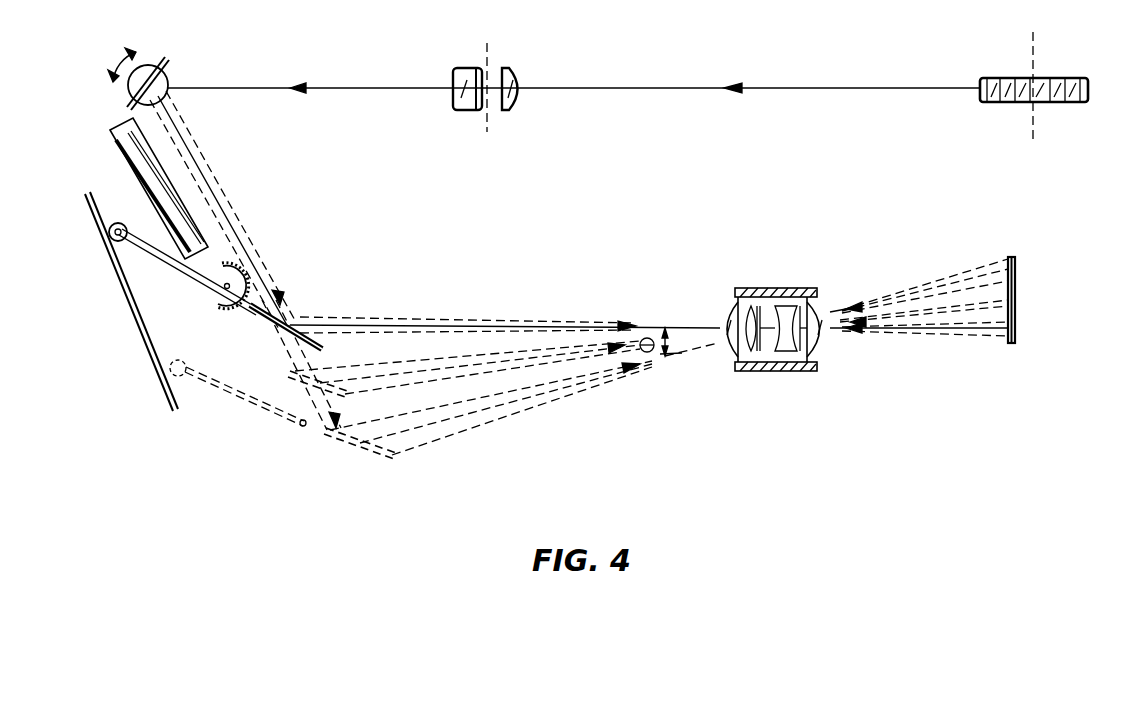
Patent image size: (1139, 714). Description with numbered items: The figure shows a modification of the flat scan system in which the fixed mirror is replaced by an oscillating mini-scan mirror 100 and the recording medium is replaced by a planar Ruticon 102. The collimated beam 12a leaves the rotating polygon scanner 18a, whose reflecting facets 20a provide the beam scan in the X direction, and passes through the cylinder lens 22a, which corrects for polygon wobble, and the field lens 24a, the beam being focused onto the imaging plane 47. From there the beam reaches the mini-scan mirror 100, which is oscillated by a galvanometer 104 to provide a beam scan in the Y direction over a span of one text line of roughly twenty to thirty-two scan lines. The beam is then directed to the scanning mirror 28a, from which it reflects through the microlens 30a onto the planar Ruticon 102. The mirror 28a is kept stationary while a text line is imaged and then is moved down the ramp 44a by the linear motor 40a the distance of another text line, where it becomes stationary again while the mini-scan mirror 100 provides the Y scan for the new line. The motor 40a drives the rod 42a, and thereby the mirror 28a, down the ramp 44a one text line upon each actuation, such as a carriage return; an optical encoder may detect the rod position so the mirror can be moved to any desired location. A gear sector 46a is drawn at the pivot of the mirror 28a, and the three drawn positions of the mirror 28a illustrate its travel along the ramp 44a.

The collimated beam 12a is at (820, 89).
The rotating polygon scanner 18a is at (1023, 78).
The reflecting facets 20a is at (1060, 102).
The imaging plane 47 is at (488, 58).
The field lens 24a is at (453, 100).
The cylinder lens 22a is at (523, 102).
The oscillating mini-scan mirror 100 is at (165, 59).
The galvanometer 104 is at (171, 80).
The linear motor 40a is at (128, 163).
The push rod 42a is at (207, 278).
The ramp 44a is at (150, 322).
The gear 46a is at (246, 268).
The scanning mirror 28a is at (323, 347).
The microlens 30a is at (783, 371).
The planar Ruticon 102 is at (1012, 343).